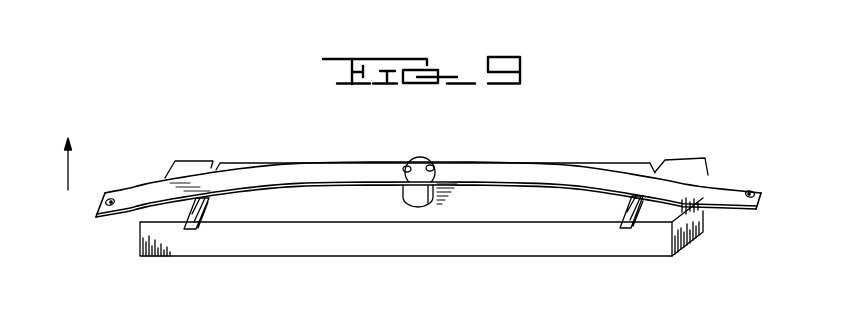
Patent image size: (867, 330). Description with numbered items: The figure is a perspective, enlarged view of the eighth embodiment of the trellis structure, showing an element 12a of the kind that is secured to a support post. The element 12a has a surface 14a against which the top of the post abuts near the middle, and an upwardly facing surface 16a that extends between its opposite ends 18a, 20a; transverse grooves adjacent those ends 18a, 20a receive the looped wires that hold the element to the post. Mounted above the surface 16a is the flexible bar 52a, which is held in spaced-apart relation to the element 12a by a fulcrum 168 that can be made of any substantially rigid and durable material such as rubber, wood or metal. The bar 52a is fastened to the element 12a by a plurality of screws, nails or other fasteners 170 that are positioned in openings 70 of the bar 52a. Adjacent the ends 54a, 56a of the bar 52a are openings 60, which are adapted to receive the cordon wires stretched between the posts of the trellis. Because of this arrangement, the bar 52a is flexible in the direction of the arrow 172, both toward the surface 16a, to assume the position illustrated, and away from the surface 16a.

The element 12a is at (557, 158).
The surface 14a is at (519, 256).
The surface 16a is at (604, 159).
The end 18a is at (140, 239).
The end 20a is at (686, 231).
The bar 52a is at (437, 184).
The end 54a is at (96, 211).
The end 56a is at (763, 195).
The openings 60 is at (113, 198).
The openings 70 is at (402, 185).
The fulcrum 168 is at (435, 156).
The fasteners 170 is at (428, 164).
The arrow 172 is at (67, 148).